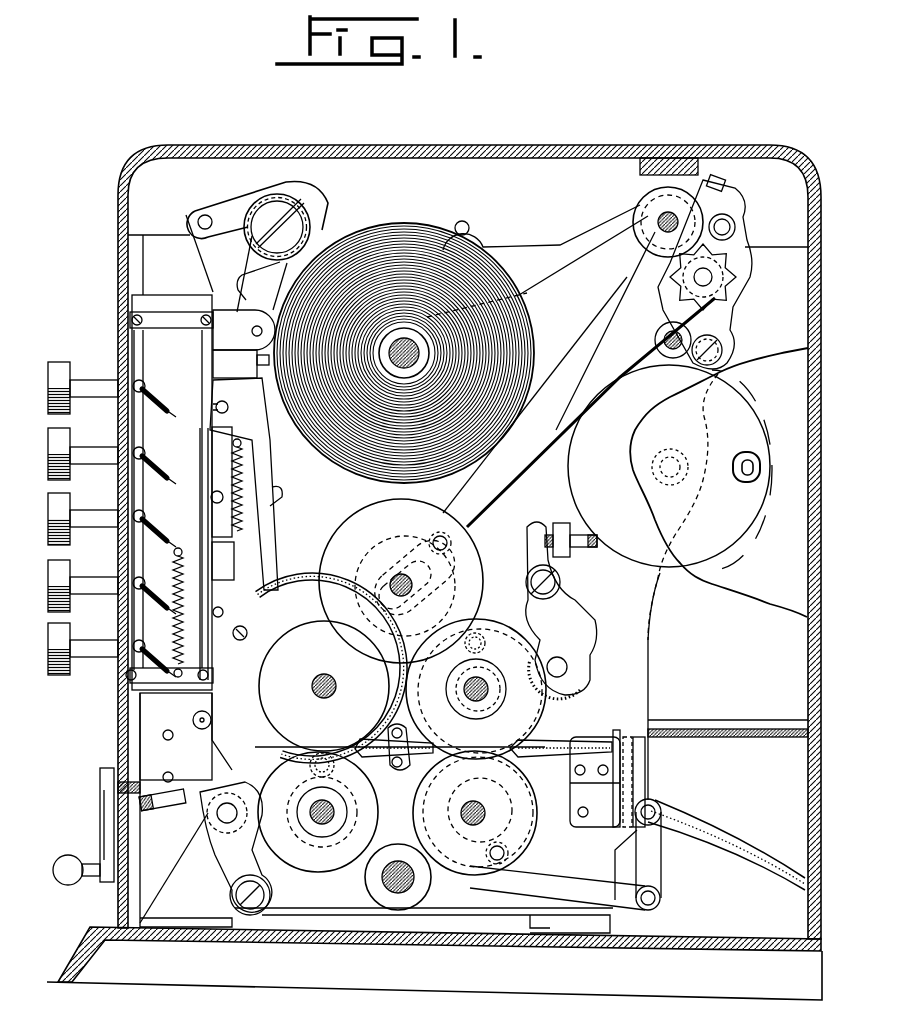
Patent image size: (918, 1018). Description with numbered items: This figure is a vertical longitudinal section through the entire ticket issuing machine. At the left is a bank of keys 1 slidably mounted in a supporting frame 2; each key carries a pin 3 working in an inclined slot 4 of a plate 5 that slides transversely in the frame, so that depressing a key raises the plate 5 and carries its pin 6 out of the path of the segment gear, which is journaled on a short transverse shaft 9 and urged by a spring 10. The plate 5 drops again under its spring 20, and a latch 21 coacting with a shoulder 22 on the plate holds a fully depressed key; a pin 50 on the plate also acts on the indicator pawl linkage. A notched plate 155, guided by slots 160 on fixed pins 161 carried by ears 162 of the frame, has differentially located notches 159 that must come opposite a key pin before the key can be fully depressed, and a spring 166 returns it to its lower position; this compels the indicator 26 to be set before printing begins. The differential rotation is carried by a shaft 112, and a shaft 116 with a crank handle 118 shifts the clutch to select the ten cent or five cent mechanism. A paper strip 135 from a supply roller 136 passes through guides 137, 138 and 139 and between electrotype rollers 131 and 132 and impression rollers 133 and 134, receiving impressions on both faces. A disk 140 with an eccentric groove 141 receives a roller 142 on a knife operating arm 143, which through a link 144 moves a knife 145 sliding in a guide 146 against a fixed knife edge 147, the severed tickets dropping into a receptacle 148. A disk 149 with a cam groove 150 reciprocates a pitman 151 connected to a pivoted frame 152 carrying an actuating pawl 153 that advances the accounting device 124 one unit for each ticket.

The keys 1 is at (70, 447).
The supporting frame 2 is at (133, 343).
The pin 3 is at (143, 390).
The inclined slot 4 is at (161, 407).
The plate 5 is at (175, 340).
The pin 6 is at (200, 727).
The short transverse shaft 9 is at (297, 210).
The spring 10 is at (216, 216).
The spring 20 is at (177, 614).
The latch 21 is at (243, 559).
The shoulder 22 is at (204, 548).
The indicator 26 is at (582, 490).
The pin 50 is at (216, 410).
The shaft 112 is at (481, 684).
The shaft 116 is at (130, 781).
The crank handle 118 is at (75, 856).
The accounting device 124 is at (637, 200).
The electrotype roller 131 is at (526, 711).
The electrotype roller 132 is at (320, 873).
The impression roller 133 is at (266, 668).
The impression roller 134 is at (528, 848).
The paper strip 135 is at (275, 510).
The supply roller 136 is at (420, 237).
The guide 137 is at (259, 607).
The guide 138 is at (398, 770).
The guide 139 is at (560, 745).
The disk 140 is at (482, 875).
The eccentric groove 141 is at (432, 823).
The roller 142 is at (575, 880).
The knife operating arm 143 is at (660, 906).
The link 144 is at (662, 878).
The knife 145 is at (656, 805).
The guide 146 is at (602, 826).
The fixed knife edge 147 is at (620, 765).
The receptacle 148 is at (742, 750).
The disk 149 is at (478, 538).
The cam groove 150 is at (370, 545).
The pitman 151 is at (628, 322).
The pivoted frame 152 is at (723, 192).
The actuating pawl 153 is at (734, 212).
The notched plate 155 is at (250, 514).
The notches 159 is at (212, 497).
The slots 160 is at (257, 363).
The fixed pins 161 is at (252, 332).
The ears 162 is at (240, 320).
The spring 166 is at (240, 489).